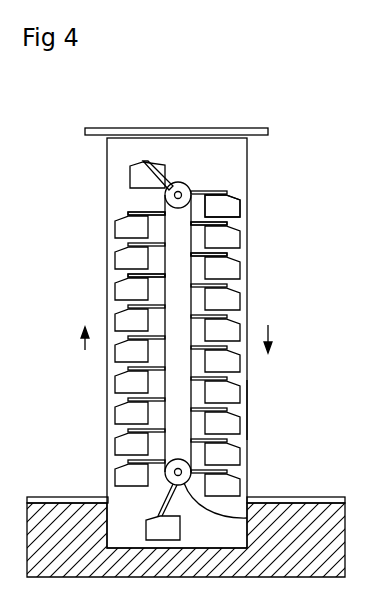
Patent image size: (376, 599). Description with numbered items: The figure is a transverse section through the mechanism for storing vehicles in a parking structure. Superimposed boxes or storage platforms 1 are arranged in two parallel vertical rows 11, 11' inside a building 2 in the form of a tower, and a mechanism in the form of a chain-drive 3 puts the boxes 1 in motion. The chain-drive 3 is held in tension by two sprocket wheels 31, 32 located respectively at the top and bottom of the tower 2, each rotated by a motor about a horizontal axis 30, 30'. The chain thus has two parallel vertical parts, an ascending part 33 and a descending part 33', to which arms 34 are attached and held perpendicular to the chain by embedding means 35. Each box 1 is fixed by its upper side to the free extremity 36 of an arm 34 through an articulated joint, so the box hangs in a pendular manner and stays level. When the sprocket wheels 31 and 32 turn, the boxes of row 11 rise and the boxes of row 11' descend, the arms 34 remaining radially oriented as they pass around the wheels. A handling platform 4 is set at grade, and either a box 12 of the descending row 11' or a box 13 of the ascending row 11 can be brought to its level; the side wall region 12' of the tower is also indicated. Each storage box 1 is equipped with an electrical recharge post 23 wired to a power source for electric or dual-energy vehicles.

The storage platforms 1 is at (243, 194).
The building 2 is at (249, 328).
The chain-drive 3 is at (222, 193).
The handling platform 4 is at (82, 497).
The ascending row 11 is at (156, 312).
The descending row 11' is at (216, 122).
The box of the descending row 12 is at (251, 464).
The housing side wall 12' is at (280, 400).
The box of the ascending row 13 is at (117, 442).
The electrical recharge post 23 is at (128, 213).
The horizontal axis 30 is at (173, 142).
The horizontal axis 30' is at (240, 456).
The sprocket wheel 31 is at (186, 188).
The sprocket wheel 32 is at (252, 504).
The ascending part 33 is at (100, 259).
The descending part 33' is at (265, 239).
The arms 34 is at (193, 284).
The embedding means 35 is at (193, 312).
The free extremity 36 is at (222, 223).